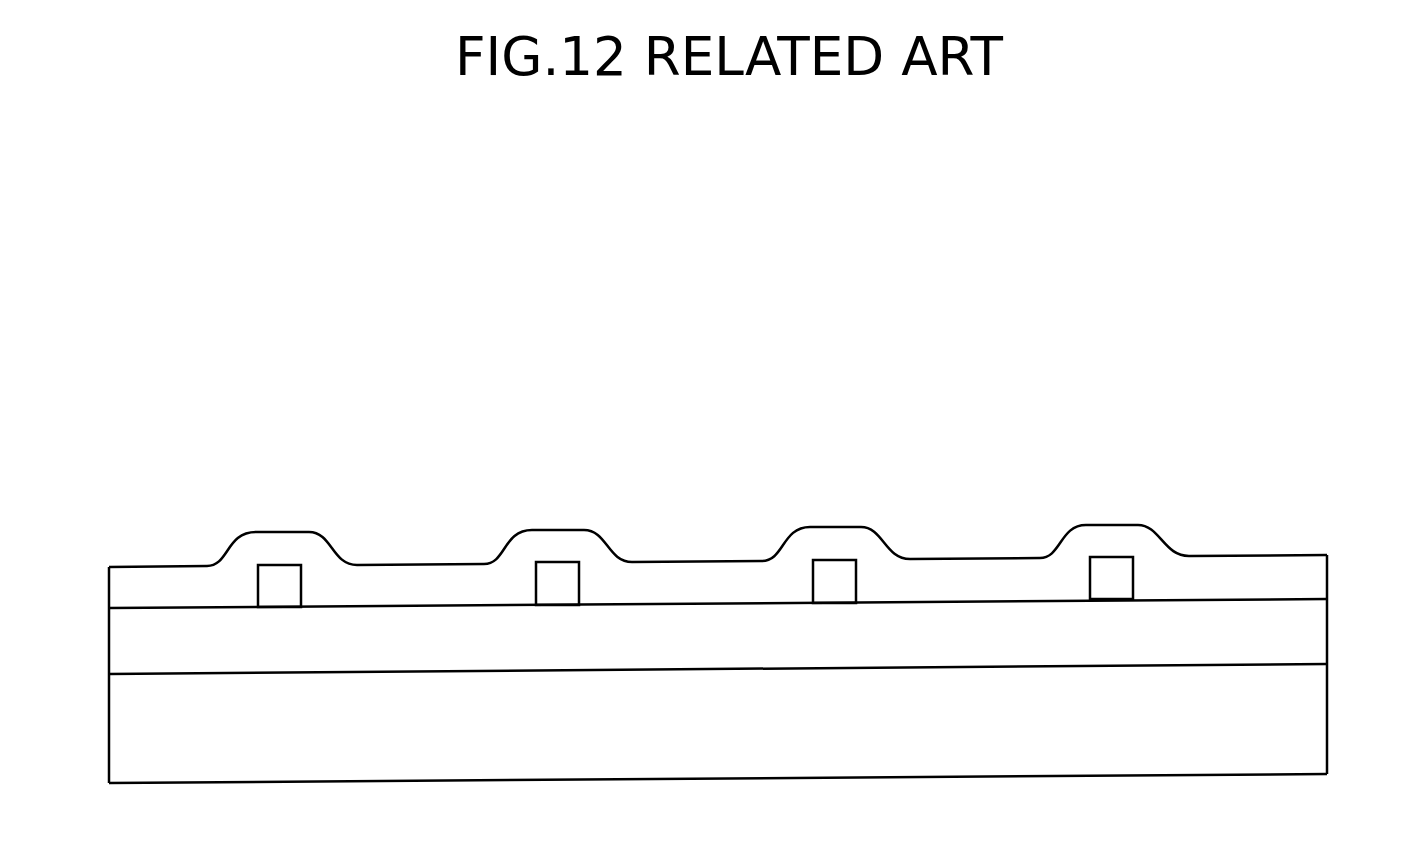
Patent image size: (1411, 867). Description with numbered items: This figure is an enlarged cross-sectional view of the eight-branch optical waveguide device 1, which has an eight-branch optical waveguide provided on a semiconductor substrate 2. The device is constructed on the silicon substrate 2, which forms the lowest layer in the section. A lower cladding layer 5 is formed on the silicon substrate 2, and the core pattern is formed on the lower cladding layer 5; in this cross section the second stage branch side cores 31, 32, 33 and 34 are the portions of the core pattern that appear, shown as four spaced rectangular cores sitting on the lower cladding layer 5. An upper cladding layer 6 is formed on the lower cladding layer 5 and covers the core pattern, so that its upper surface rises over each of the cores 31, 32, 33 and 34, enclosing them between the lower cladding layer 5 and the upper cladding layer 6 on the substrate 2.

The 8-branch optical waveguide device 1 is at (1250, 422).
The semiconductor substrate 2 is at (1267, 775).
The lower cladding layer 5 is at (1315, 631).
The upper cladding layer 6 is at (1265, 555).
The second stage branch side core 31 is at (282, 585).
The second stage branch side core 32 is at (559, 584).
The second stage branch side core 33 is at (836, 583).
The second stage branch side core 34 is at (1113, 580).